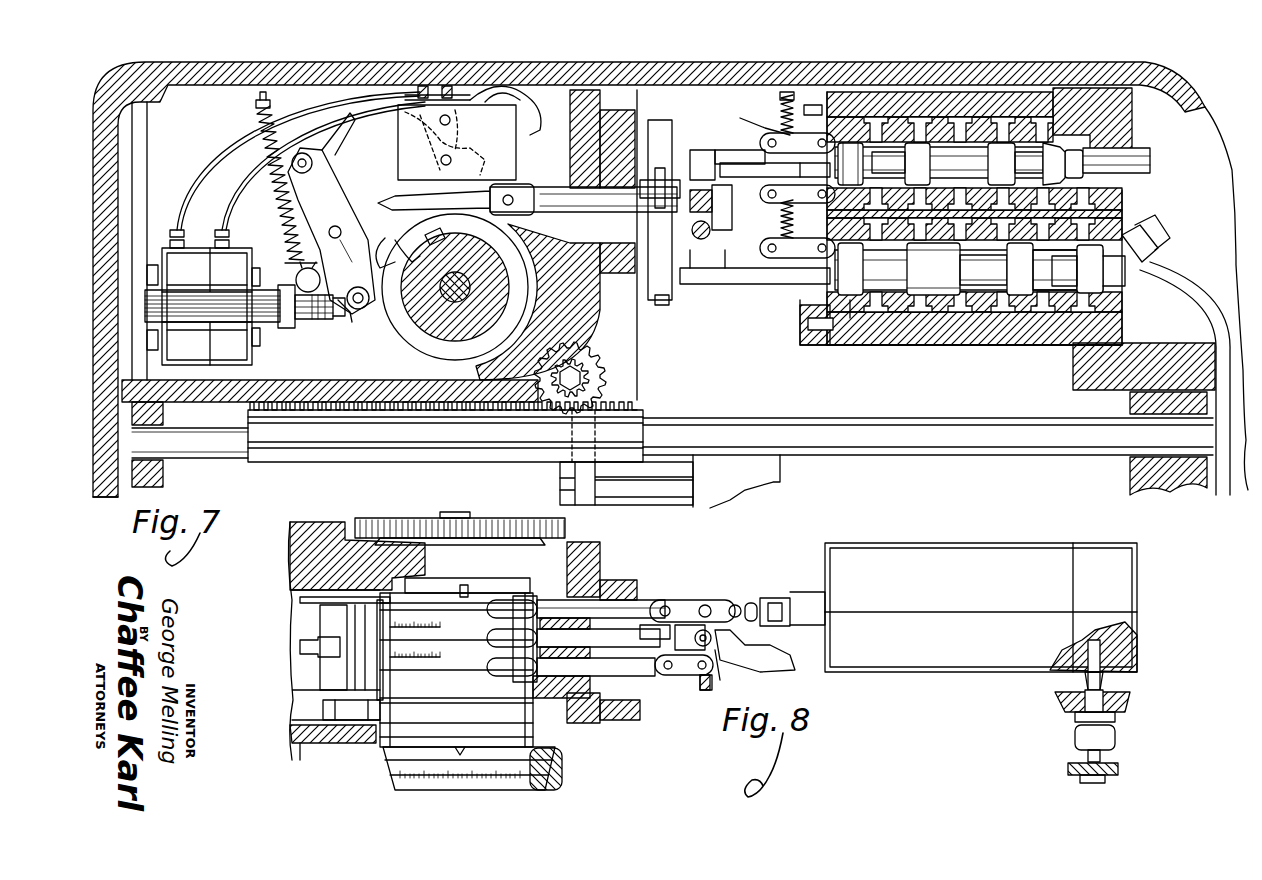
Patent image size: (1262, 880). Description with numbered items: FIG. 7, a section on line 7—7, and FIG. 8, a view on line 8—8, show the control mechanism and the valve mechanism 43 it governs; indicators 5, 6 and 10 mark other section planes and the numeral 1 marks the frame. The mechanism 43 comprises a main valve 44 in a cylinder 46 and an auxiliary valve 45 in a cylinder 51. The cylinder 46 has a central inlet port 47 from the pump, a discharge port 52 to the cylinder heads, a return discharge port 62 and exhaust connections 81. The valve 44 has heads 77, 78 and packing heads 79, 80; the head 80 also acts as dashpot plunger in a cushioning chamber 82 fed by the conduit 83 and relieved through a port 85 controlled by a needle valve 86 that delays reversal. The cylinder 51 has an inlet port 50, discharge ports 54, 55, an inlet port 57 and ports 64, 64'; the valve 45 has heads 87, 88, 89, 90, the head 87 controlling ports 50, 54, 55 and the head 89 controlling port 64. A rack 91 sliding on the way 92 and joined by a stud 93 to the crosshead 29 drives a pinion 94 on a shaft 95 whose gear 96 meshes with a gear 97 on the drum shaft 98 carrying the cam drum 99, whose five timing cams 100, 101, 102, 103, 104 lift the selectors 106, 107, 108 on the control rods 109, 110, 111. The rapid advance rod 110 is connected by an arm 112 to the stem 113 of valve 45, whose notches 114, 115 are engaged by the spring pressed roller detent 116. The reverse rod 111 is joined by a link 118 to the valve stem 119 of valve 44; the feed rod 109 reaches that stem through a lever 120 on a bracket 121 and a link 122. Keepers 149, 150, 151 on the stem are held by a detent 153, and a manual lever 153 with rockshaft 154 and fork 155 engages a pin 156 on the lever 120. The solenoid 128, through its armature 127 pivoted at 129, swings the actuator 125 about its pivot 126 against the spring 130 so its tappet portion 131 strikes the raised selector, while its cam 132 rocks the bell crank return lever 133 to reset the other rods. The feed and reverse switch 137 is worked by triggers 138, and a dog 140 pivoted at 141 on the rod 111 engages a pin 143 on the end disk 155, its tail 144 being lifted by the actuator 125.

In FIG. 8, the housing 1 is at (308, 745).
In FIG. 7, the section line 5 is at (532, 482).
In FIG. 7, the section line 6 is at (1053, 85).
In FIG. 8, the section line 7— 7 is at (1154, 620).
In FIG. 7, the section line 8— 8 is at (222, 154).
In FIG. 8, the section line 10 is at (557, 577).
In FIG. 7, the crosshead 29 is at (770, 472).
In FIG. 7, the valve mechanism 43 is at (840, 345).
In FIG. 8, the valve mechanism 43 is at (950, 553).
In FIG. 7, the main valve control 44 is at (1100, 112).
In FIG. 7, the auxiliary control valve 45 is at (815, 345).
In FIG. 7, the main valve cylinder 46 is at (850, 160).
In FIG. 7, the central inlet port 47 is at (958, 140).
In FIG. 7, the inlet port 50 is at (925, 300).
In FIG. 7, the auxiliary valve cylinder 51 is at (876, 300).
In FIG. 7, the discharge port 52 is at (930, 128).
In FIG. 7, the discharge port 54 is at (856, 318).
In FIG. 7, the discharge port 55 is at (972, 300).
In FIG. 7, the inlet port 57 is at (1012, 300).
In FIG. 7, the discharge port 62 is at (1025, 152).
In FIG. 7, the port 64 is at (1076, 308).
In FIG. 7, the port 64' is at (1048, 314).
In FIG. 7, the valve head 77 is at (781, 113).
In FIG. 7, the valve head 78 is at (1000, 143).
In FIG. 7, the packing head 79 is at (782, 122).
In FIG. 7, the packing head 80 is at (1090, 160).
In FIG. 7, the exhaust connections 81 is at (1072, 150).
In FIG. 7, the dashpot chamber 82 is at (1100, 160).
In FIG. 8, the dashpot chamber 82 is at (1160, 632).
In FIG. 7, the conduit 83 is at (1220, 250).
In FIG. 8, the relief port 85 is at (1100, 690).
In FIG. 8, the needle valve 86 is at (1120, 705).
In FIG. 7, the valve head 87 is at (945, 300).
In FIG. 7, the valve head 88 is at (1030, 300).
In FIG. 7, the valve head 89 is at (1095, 280).
In FIG. 7, the packing head 90 is at (800, 335).
In FIG. 7, the rack 91 is at (643, 405).
In FIG. 7, the rod-like way 92 is at (768, 430).
In FIG. 7, the stud 93 is at (663, 492).
In FIG. 7, the pinion 94 is at (578, 378).
In FIG. 7, the shaft 95 is at (586, 370).
In FIG. 7, the gear 96 is at (590, 355).
In FIG. 8, the gear 97 is at (395, 520).
In FIG. 7, the drum shaft 98 is at (468, 290).
In FIG. 8, the drum shaft 98 is at (452, 512).
In FIG. 8, the cam drum 99 is at (420, 680).
In FIG. 7, the timing cam 100 is at (365, 308).
In FIG. 7, the timing cam 101 is at (322, 276).
In FIG. 7, the timing cam 102 is at (382, 244).
In FIG. 7, the timing cam 103 is at (407, 251).
In FIG. 7, the timing cam 104 is at (430, 232).
In FIG. 7, the selector 106 is at (405, 192).
In FIG. 8, the selector 106 is at (500, 670).
In FIG. 8, the selector 107 is at (540, 690).
In FIG. 8, the selector 108 is at (580, 640).
In FIG. 7, the feed control rod 109 is at (655, 180).
In FIG. 8, the feed control rod 109 is at (665, 675).
In FIG. 8, the rapid advance control rod 110 is at (660, 610).
In FIG. 8, the reverse control rod 111 is at (632, 600).
In FIG. 7, the arm 112 is at (650, 270).
In FIG. 7, the valve stem 113 is at (700, 284).
In FIG. 8, the valve stem 113 is at (690, 600).
In FIG. 7, the notch 114 is at (762, 240).
In FIG. 7, the notch 115 is at (762, 258).
In FIG. 7, the roller spring pressed detent 116 is at (781, 218).
In FIG. 7, the link 118 is at (705, 150).
In FIG. 8, the link 118 is at (710, 610).
In FIG. 7, the valve stem 119 is at (760, 148).
In FIG. 8, the valve stem 119 is at (740, 600).
In FIG. 7, the lever 120 is at (678, 170).
In FIG. 8, the lever 120 is at (712, 672).
In FIG. 8, the bracket 121 is at (762, 668).
In FIG. 8, the link 122 is at (678, 680).
In FIG. 7, the solenoid operated actuator 125 is at (335, 318).
In FIG. 8, the solenoid operated actuator 125 is at (320, 672).
In FIG. 7, the pivot 126 is at (330, 230).
In FIG. 7, the armature 127 is at (300, 320).
In FIG. 7, the solenoid 128 is at (200, 262).
In FIG. 7, the pivot 129 is at (348, 318).
In FIG. 7, the spring 130 is at (310, 158).
In FIG. 8, the tappet portion 131 is at (325, 665).
In FIG. 7, the cam 132 is at (290, 205).
In FIG. 8, the cam 132 is at (300, 647).
In FIG. 7, the bell crank return lever 133 is at (318, 172).
In FIG. 7, the feed and reverse switch 137 is at (478, 105).
In FIG. 7, the actuating fingers 138 is at (445, 170).
In FIG. 8, the latch or dog 140 is at (302, 600).
In FIG. 8, the pivotal connection 141 is at (500, 585).
In FIG. 8, the pin 143 is at (464, 585).
In FIG. 7, the tail 144 is at (300, 178).
In FIG. 7, the keeper 149 is at (735, 150).
In FIG. 8, the keeper 149 is at (760, 600).
In FIG. 7, the keeper 150 is at (775, 166).
In FIG. 7, the keeper 151 is at (814, 166).
In FIG. 7, the lever 153 is at (752, 118).
In FIG. 8, the lever 153 is at (775, 600).
In FIG. 7, the rockshaft 154 is at (722, 284).
In FIG. 7, the fork 155 is at (726, 198).
In FIG. 7, the pin 156 is at (692, 222).
In FIG. 8, the pin 156 is at (712, 692).